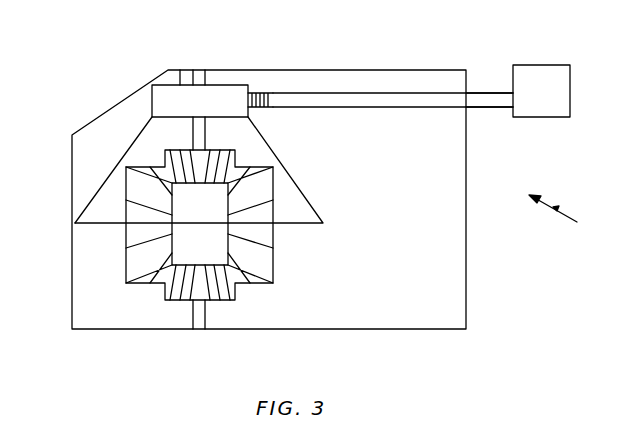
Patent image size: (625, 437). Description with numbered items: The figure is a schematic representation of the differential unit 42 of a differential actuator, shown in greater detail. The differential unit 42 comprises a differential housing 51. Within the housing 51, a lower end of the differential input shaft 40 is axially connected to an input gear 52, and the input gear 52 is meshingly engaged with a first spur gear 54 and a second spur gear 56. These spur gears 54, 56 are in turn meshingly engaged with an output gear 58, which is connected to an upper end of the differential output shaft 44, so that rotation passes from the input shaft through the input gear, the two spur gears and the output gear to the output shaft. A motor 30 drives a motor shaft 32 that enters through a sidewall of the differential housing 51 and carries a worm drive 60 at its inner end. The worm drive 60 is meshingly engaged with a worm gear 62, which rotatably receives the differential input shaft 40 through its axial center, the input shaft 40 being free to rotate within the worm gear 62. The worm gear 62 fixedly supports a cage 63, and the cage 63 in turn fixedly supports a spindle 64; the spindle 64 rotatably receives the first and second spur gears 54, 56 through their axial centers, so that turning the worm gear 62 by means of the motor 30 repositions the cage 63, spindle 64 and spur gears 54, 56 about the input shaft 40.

The motor 30 is at (553, 65).
The motor shaft 32 is at (490, 92).
The differential input shaft 40 is at (212, 82).
The differential unit 42 is at (566, 220).
The differential output shaft 44 is at (207, 315).
The differential housing 51 is at (348, 68).
The input gear 52 is at (165, 165).
The first spur gear 54 is at (130, 266).
The second spur gear 56 is at (268, 252).
The output gear 58 is at (178, 290).
The worm drive 60 is at (270, 92).
The worm gear 62 is at (180, 70).
The cage 63 is at (106, 180).
The spindle 64 is at (86, 224).